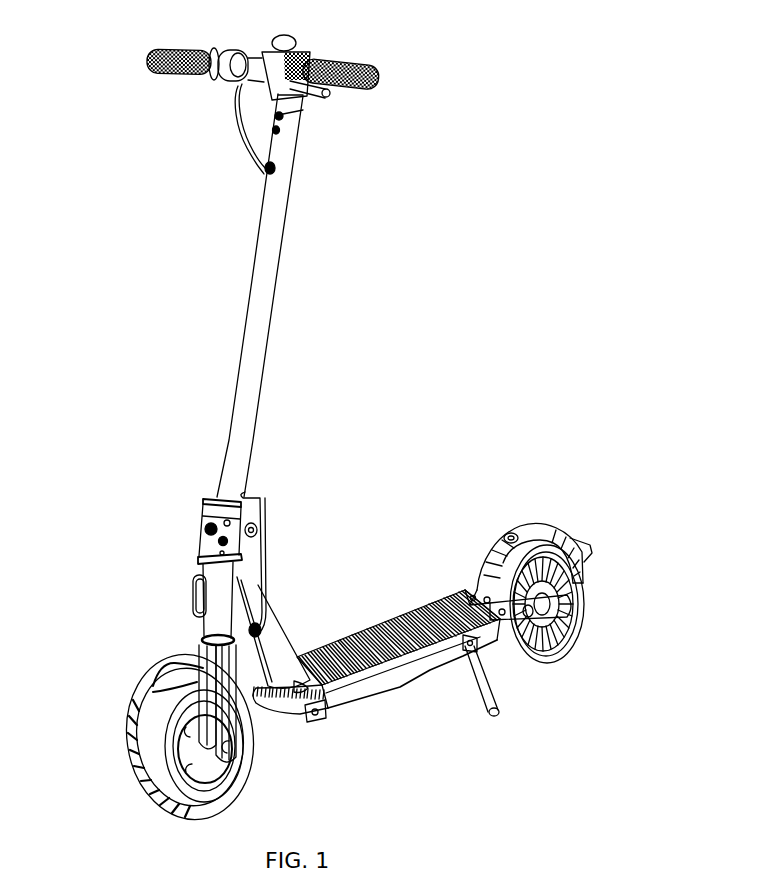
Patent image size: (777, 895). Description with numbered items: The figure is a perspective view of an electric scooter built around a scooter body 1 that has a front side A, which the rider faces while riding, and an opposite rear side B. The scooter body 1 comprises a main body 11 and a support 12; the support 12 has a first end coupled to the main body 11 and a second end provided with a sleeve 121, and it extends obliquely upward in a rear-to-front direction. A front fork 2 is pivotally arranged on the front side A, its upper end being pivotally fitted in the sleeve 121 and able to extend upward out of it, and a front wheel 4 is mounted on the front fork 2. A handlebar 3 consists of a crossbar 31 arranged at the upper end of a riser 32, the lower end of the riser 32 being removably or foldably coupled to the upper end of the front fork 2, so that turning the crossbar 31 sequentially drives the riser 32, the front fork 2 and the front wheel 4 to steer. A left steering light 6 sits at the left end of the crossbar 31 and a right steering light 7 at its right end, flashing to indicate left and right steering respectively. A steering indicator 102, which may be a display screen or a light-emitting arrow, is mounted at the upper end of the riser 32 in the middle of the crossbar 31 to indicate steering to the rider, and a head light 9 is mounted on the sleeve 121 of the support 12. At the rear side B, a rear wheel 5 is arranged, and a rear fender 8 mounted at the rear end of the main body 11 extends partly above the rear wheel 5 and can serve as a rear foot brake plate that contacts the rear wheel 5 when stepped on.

The scooter body 1 is at (385, 525).
The main body 11 is at (382, 623).
The support 12 is at (278, 624).
The sleeve 121 is at (213, 625).
The front fork 2 is at (222, 677).
The handlebar 3 is at (97, 173).
The crossbar 31 is at (185, 72).
The riser 32 is at (262, 264).
The front wheel 4 is at (138, 778).
The rear wheel 5 is at (530, 653).
The left steering light 6 is at (375, 86).
The right steering light 7 is at (148, 58).
The rear fender 8 is at (540, 533).
The head light 9 is at (197, 597).
The steering indicator 102 is at (253, 50).
The front side A is at (302, 688).
The rear side B is at (490, 617).